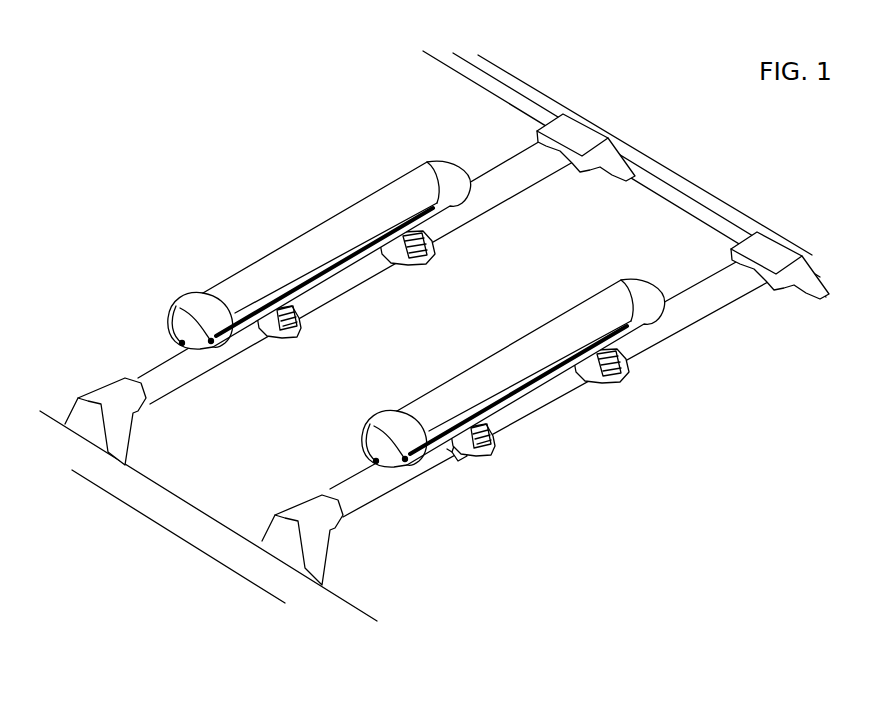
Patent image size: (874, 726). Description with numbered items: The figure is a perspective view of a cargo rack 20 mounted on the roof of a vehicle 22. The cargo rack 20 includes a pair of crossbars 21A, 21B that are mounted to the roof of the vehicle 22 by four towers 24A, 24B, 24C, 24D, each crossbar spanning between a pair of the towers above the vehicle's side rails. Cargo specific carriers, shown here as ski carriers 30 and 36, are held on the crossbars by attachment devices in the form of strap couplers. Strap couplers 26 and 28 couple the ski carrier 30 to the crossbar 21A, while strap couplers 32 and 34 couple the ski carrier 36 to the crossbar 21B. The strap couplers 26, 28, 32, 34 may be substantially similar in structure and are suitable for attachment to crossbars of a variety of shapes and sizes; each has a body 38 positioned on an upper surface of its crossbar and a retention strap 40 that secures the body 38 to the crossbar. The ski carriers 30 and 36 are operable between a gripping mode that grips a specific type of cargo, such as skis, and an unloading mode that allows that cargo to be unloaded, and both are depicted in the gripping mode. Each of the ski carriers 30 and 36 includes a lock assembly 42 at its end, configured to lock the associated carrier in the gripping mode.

The cargo rack 20 is at (253, 124).
The crossbar 21A is at (734, 290).
The crossbar 21B is at (550, 185).
The vehicle 22 is at (218, 480).
The tower 24A is at (785, 277).
The tower 24B is at (328, 548).
The tower 24C is at (150, 444).
The tower 24D is at (615, 165).
The strap coupler 26 is at (495, 445).
The strap coupler 28 is at (627, 373).
The ski carrier 30 is at (502, 347).
The strap coupler 32 is at (303, 328).
The strap coupler 34 is at (433, 257).
The ski carrier 36 is at (371, 193).
The body 38 is at (459, 451).
The retention strap 40 is at (457, 458).
The lock assembly 42 is at (182, 348).